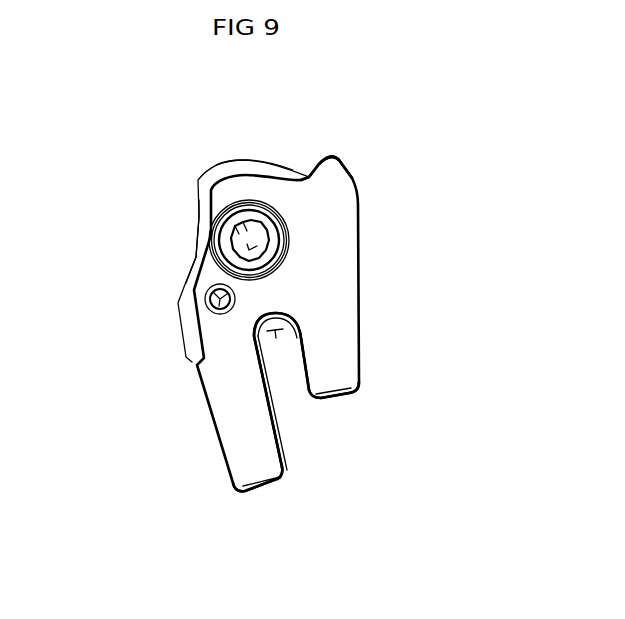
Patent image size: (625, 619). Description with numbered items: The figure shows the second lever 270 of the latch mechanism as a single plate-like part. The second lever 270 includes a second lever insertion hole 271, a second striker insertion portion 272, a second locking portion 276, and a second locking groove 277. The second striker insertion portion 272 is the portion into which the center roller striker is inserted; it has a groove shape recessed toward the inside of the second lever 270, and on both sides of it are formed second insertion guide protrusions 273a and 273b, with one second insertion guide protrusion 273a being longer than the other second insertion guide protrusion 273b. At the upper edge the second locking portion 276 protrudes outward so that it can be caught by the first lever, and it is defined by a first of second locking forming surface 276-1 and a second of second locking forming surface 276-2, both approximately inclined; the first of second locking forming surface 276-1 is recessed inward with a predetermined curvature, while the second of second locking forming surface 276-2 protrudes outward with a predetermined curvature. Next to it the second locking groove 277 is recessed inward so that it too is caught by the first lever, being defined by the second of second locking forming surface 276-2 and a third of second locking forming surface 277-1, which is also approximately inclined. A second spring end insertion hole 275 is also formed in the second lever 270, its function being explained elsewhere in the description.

The second lever 270 is at (169, 382).
The second lever insertion hole 271 is at (241, 232).
The second striker insertion portion 272 is at (267, 330).
The second insertion guide protrusion 273a is at (251, 466).
The second insertion guide protrusion 273b is at (329, 356).
The second spring end insertion hole 275 is at (200, 289).
The second locking portion 276 is at (190, 178).
The first of second locking forming surface 276-1 is at (190, 228).
The second of second locking forming surface 276-2 is at (216, 155).
The second locking groove 277 is at (293, 166).
The third of second locking forming surface 277-1 is at (307, 156).